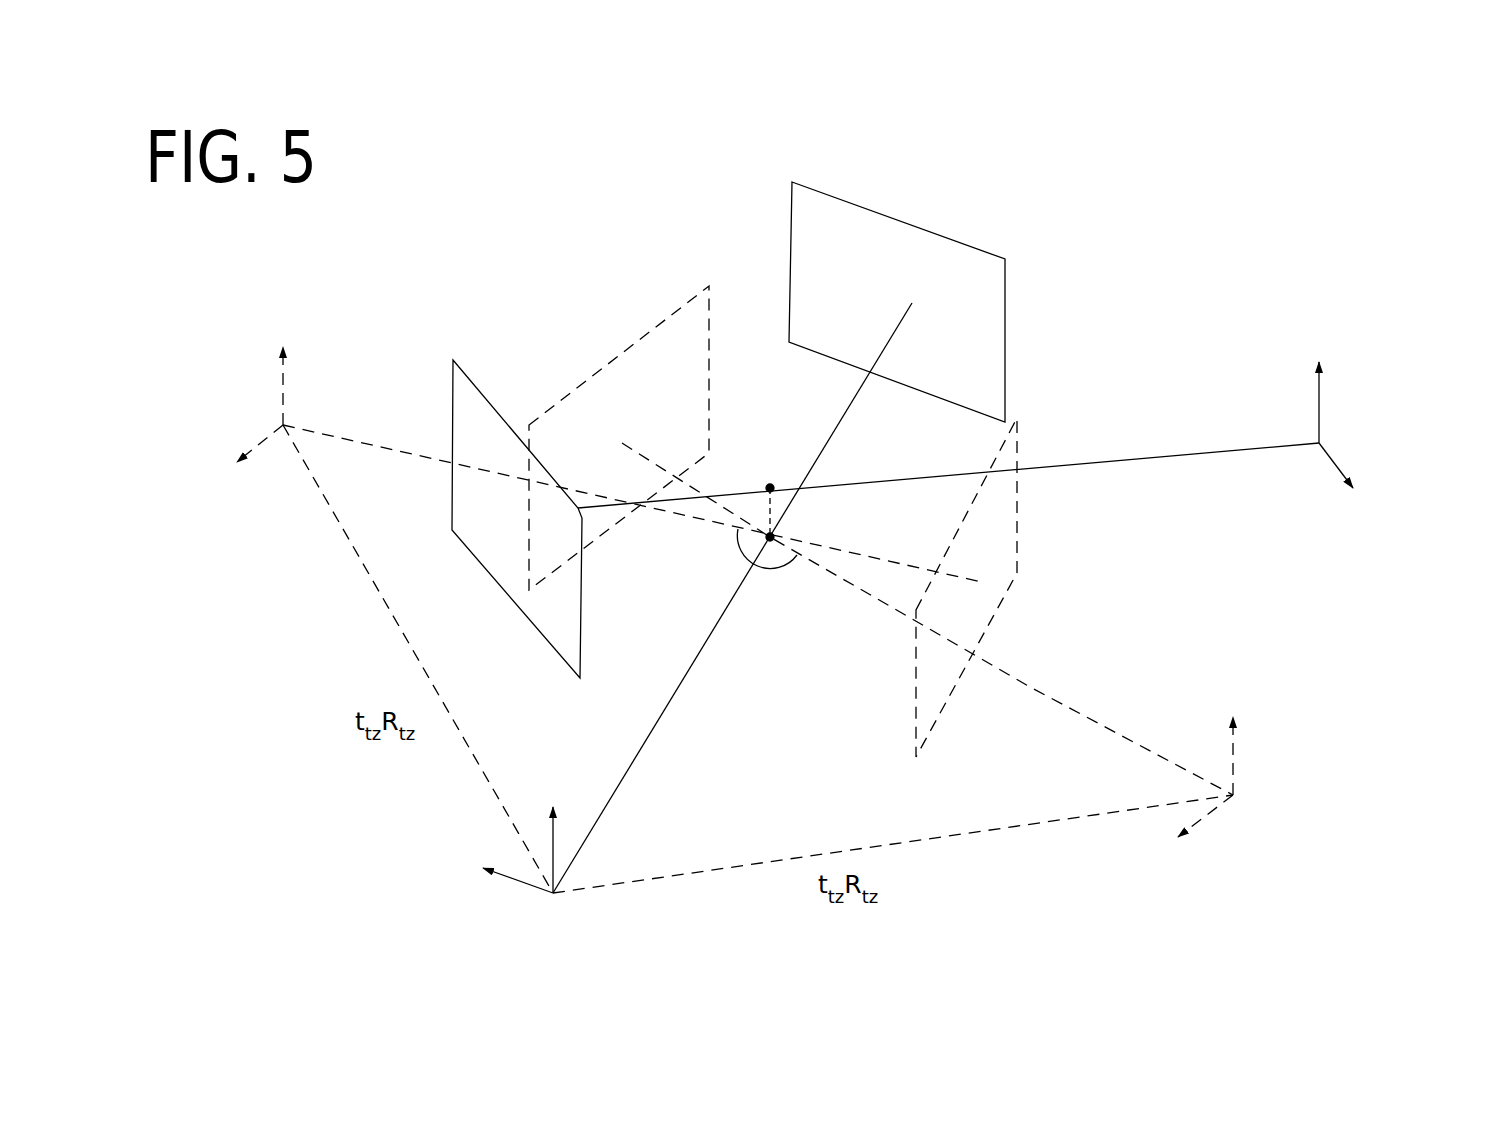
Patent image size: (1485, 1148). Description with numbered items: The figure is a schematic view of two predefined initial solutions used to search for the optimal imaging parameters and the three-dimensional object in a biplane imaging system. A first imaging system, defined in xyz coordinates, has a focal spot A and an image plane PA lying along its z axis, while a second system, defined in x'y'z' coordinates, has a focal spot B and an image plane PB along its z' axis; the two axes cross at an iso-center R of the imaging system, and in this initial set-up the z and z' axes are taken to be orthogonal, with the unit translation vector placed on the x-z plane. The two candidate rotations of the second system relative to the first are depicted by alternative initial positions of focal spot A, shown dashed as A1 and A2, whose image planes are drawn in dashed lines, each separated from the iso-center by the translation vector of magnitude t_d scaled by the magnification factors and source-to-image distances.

The focal spot A is at (1281, 426).
The focal spot B is at (562, 856).
The iso-center imaging system R is at (873, 511).
The initial position of focal spot A (left) A1 is at (353, 398).
The initial position of focal spot A (right) A2 is at (1302, 770).
The image plane A PA is at (558, 539).
The image plane B PB is at (988, 302).